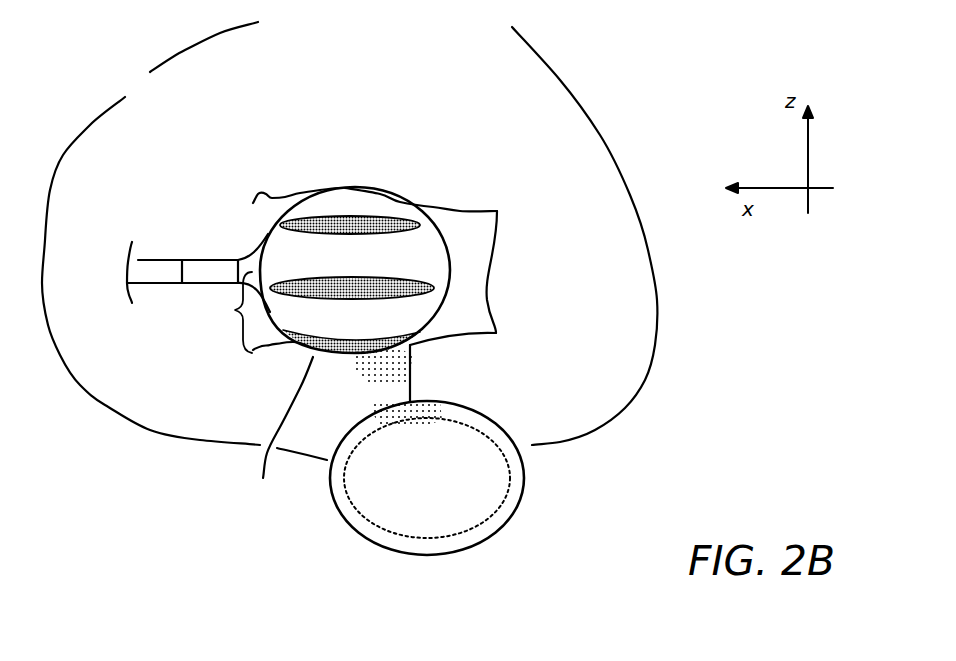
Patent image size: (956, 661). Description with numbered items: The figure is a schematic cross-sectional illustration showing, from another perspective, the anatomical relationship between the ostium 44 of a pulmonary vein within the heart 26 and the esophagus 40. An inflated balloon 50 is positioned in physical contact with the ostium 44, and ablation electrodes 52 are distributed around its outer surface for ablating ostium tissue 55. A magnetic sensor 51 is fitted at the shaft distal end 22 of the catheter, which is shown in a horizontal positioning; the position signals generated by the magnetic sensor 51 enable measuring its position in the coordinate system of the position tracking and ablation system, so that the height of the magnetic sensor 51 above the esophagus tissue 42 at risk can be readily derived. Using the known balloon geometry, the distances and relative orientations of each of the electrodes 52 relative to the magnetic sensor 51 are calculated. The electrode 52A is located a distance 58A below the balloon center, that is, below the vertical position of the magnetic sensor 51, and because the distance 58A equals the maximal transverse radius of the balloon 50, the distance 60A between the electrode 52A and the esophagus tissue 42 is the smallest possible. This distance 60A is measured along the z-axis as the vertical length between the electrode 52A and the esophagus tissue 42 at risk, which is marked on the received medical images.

The heart 26 is at (185, 97).
The shaft distal end 22 is at (150, 267).
The magnetic sensor 51 is at (207, 267).
The ostium 44 is at (433, 205).
The balloon 50 is at (440, 262).
The ablation electrodes 52 is at (362, 278).
The distance 58A is at (219, 312).
The ostium tissue 55 is at (380, 373).
The distance 60A is at (412, 374).
The electrode 52A is at (276, 434).
The esophagus 40 is at (338, 518).
The esophagus tissue 42 is at (405, 423).